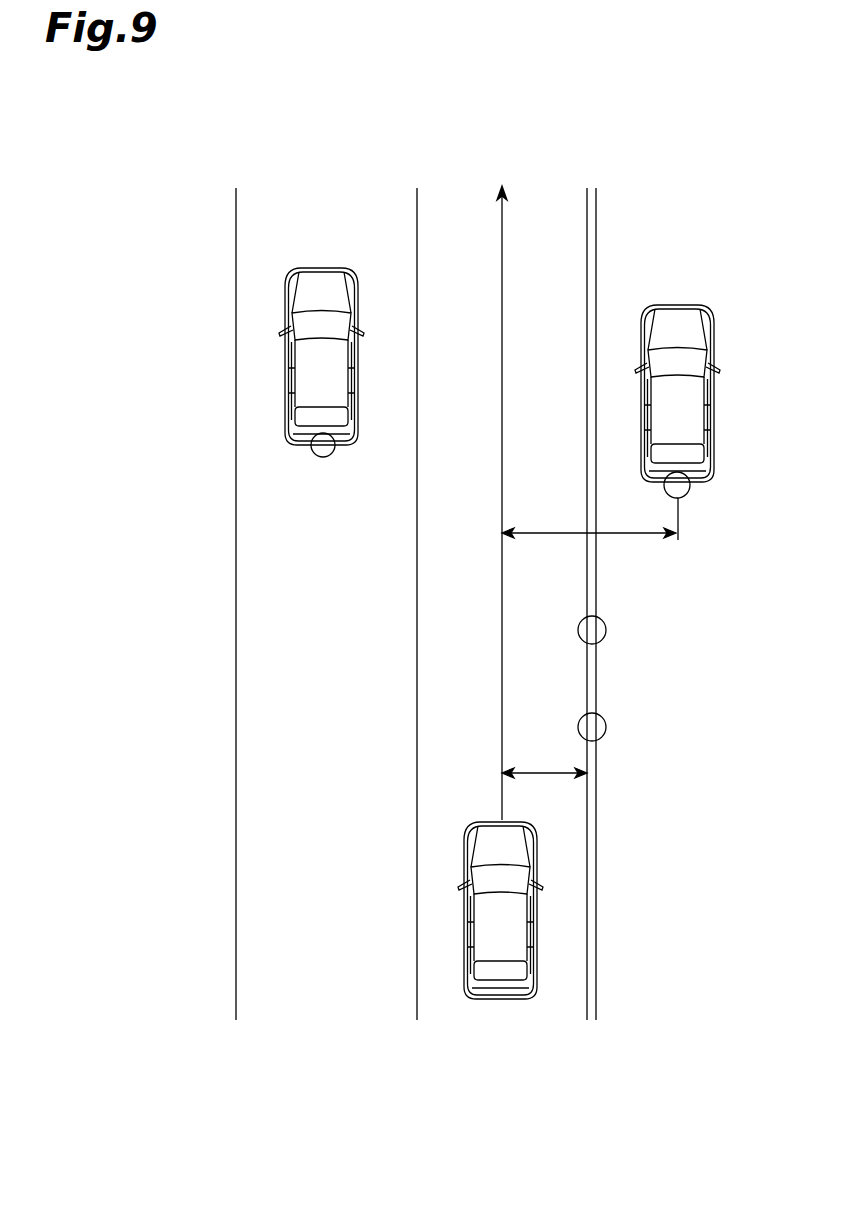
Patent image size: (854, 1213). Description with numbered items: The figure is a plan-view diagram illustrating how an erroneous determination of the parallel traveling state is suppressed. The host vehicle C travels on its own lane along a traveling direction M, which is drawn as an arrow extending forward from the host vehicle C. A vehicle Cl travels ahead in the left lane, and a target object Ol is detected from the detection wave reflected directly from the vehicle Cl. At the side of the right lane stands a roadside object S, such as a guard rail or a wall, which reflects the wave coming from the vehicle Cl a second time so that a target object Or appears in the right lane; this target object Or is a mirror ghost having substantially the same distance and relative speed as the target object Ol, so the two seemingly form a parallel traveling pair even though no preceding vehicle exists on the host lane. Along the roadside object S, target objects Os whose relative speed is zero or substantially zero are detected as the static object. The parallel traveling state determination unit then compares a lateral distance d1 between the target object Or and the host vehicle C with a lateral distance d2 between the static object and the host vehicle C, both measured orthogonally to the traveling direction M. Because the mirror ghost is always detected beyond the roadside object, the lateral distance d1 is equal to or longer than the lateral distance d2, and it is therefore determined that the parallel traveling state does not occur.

The vehicle on the left lane Cl is at (321, 266).
The target object on the left lane Ol is at (333, 456).
The target object on the right lane Or is at (686, 497).
The target object of static object Os is at (635, 727).
The traveling direction of the host vehicle M is at (498, 255).
The roadside object S is at (598, 202).
The lateral distance between parallel traveling vehicle and host vehicle d1 is at (589, 523).
The lateral distance between static object and host vehicle d2 is at (544, 763).
The host vehicle C is at (488, 1002).